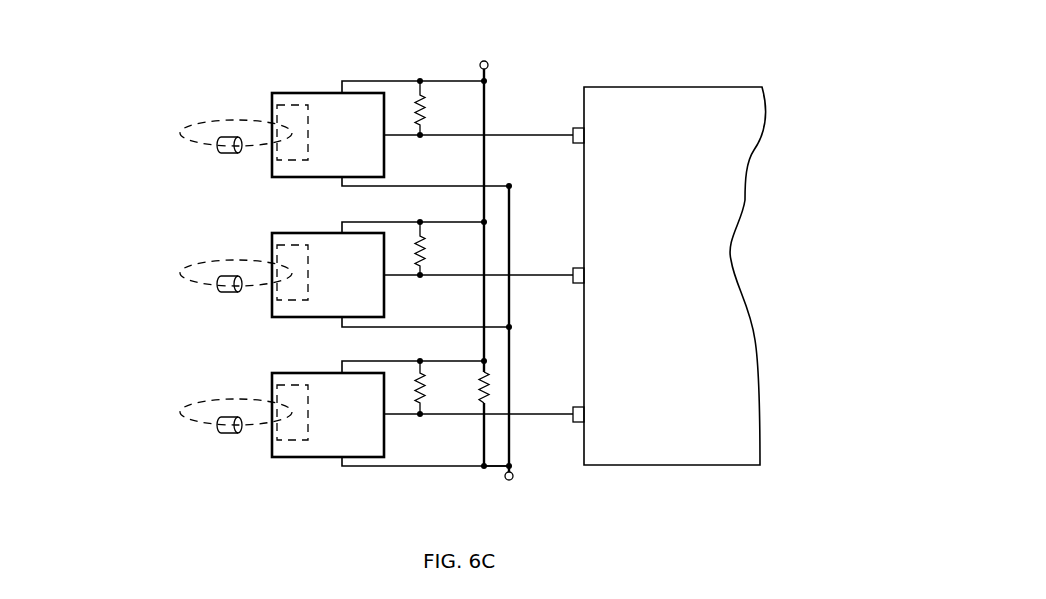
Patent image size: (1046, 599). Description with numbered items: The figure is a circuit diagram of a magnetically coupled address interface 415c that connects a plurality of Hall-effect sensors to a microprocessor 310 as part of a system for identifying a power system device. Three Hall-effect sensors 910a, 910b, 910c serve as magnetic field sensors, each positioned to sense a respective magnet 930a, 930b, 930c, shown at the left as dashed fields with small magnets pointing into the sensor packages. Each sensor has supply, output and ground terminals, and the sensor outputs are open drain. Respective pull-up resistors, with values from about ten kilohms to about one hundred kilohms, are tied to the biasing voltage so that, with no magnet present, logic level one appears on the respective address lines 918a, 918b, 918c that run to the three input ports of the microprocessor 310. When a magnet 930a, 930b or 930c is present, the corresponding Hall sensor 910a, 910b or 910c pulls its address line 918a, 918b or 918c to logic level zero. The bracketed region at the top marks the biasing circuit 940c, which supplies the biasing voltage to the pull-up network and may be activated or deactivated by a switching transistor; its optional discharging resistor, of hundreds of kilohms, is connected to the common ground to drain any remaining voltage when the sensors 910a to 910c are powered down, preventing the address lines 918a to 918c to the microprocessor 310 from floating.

The magnetically coupled address interface 415c is at (93, 75).
The microprocessor 310 is at (684, 87).
The Hall-effect sensor 910a is at (286, 93).
The Hall-effect sensor 910b is at (286, 233).
The Hall-effect sensor 910c is at (286, 373).
The magnet 930a is at (244, 143).
The magnet 930b is at (244, 283).
The magnet 930c is at (244, 423).
The address line 918a is at (548, 119).
The address line 918b is at (548, 257).
The address line 918c is at (548, 398).
The biasing circuit 940c is at (543, 43).